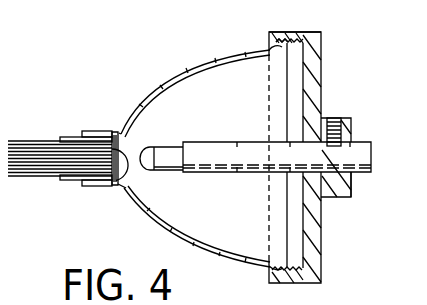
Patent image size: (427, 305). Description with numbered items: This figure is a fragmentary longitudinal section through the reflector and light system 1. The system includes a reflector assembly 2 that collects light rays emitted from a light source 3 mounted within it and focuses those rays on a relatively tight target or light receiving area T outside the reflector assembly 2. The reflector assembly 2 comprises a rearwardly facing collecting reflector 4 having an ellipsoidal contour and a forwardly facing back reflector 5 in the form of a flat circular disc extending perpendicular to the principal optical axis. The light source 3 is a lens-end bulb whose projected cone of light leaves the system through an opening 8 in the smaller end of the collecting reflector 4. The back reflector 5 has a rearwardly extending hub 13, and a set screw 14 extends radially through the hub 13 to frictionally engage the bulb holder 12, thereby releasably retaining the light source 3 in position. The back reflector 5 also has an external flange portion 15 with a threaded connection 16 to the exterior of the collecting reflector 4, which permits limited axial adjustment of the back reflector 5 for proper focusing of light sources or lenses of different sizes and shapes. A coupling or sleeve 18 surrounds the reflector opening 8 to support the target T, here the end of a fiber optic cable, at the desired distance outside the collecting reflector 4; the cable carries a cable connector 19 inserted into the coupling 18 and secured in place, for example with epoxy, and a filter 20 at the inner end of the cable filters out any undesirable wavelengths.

The reflector and light system 1 is at (338, 249).
The reflector assembly 2 is at (189, 62).
The light source 3 is at (165, 180).
The collecting reflector 4 is at (226, 262).
The back reflector 5 is at (314, 63).
The opening 8 is at (122, 148).
The bulb holder 12 is at (357, 175).
The hub 13 is at (351, 128).
The set screw 14 is at (329, 118).
The external flange portion 15 is at (293, 34).
The threaded connection 16 is at (258, 43).
The coupling or sleeve 18 is at (90, 185).
The cable connector 19 is at (77, 137).
The filter 20 is at (123, 128).
The target or light receiving area T is at (128, 190).